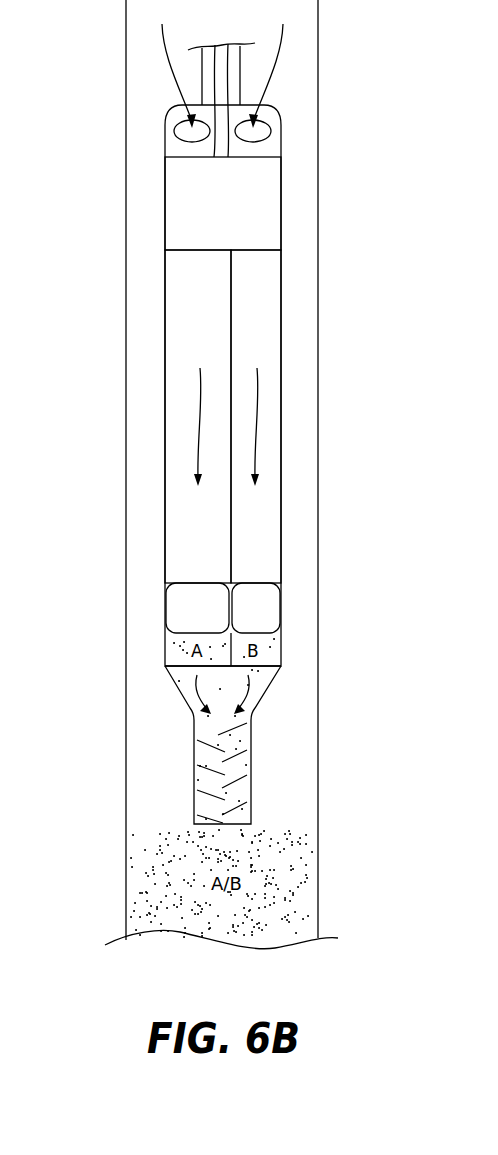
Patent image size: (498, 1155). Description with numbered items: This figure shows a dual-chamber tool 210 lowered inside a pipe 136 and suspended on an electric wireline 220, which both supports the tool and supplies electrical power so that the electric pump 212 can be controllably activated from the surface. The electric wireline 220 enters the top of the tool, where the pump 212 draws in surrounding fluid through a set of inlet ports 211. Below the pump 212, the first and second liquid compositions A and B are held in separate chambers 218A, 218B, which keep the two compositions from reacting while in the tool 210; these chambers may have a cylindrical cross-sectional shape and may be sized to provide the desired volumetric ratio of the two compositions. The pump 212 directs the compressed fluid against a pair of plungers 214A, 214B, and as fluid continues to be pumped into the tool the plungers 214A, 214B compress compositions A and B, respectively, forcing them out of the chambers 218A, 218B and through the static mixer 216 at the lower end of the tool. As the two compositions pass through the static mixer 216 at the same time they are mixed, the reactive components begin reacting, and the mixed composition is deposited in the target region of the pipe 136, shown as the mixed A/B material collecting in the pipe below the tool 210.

The pipe 136 is at (126, 477).
The dual-chamber tool 210 is at (106, 98).
The inlet ports 211 is at (174, 128).
The electric pump 212 is at (197, 210).
The first plunger 214A is at (182, 612).
The second plunger 214B is at (262, 612).
The static mixer 216 is at (193, 777).
The first chamber 218A is at (182, 322).
The second chamber 218B is at (262, 322).
The electric wireline 220 is at (243, 78).